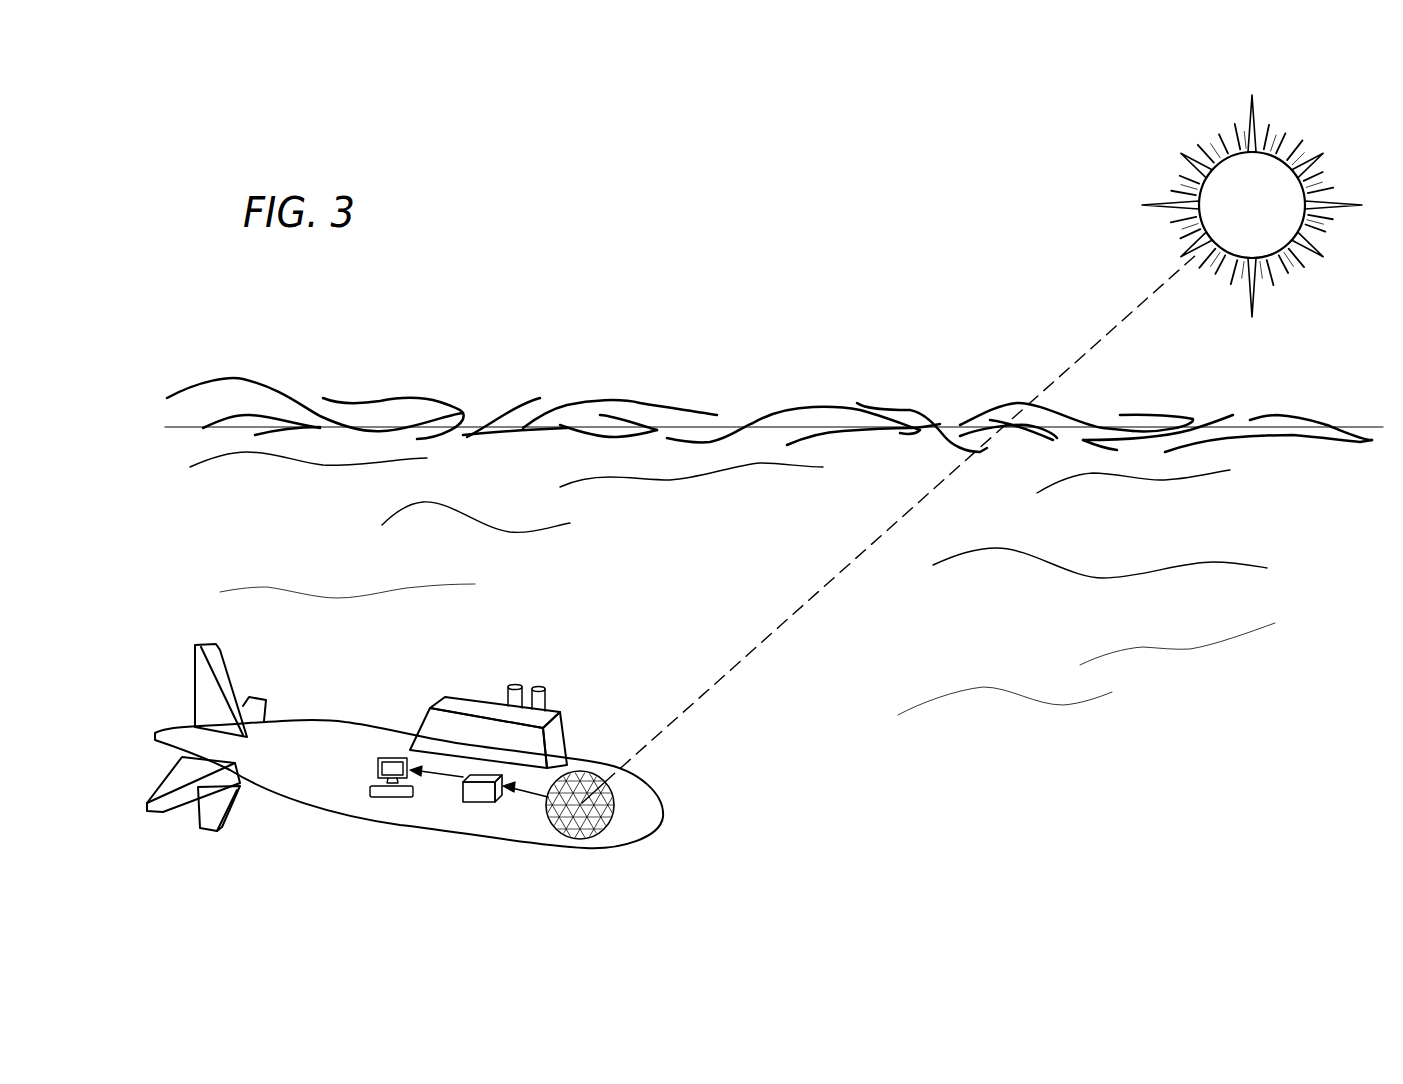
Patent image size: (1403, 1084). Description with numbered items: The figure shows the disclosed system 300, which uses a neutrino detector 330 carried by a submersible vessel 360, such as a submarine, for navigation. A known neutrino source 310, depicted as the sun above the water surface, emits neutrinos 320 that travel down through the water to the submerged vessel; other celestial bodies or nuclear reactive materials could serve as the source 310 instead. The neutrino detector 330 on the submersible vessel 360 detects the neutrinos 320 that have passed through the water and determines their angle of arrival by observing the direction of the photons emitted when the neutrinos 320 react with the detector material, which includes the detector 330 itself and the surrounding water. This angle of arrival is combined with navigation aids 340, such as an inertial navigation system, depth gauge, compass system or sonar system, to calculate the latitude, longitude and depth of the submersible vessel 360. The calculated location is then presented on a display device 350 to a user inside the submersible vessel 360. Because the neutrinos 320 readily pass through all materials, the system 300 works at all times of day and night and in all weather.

The system 300 is at (772, 810).
The neutrino source 310 is at (1210, 128).
The neutrinos 320 is at (1118, 322).
The neutrino detector 330 is at (608, 822).
The navigation aids 340 is at (492, 775).
The display device 350 is at (392, 758).
The submersible vessel 360 is at (352, 849).